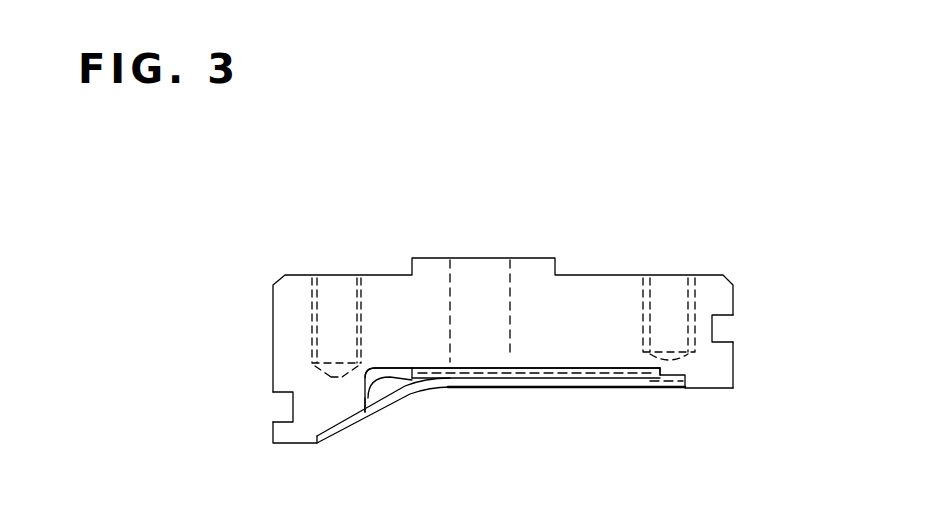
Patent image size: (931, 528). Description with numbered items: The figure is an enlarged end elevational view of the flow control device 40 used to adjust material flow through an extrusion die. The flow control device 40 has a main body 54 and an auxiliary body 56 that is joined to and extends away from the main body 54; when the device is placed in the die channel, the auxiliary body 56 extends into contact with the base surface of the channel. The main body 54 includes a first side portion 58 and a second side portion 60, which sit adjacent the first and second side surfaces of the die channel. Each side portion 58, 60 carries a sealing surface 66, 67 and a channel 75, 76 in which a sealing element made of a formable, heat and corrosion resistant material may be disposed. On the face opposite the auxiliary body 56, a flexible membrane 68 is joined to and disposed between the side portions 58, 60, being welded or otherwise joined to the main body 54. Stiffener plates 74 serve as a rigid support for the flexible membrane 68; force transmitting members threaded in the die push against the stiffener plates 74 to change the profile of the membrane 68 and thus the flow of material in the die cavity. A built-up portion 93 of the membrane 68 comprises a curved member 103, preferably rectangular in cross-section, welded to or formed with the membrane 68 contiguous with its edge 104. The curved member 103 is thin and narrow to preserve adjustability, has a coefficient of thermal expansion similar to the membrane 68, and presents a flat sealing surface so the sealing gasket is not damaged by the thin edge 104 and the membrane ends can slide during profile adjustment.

The flow control device 40 is at (553, 350).
The main body 54 is at (437, 293).
The auxiliary body 56 is at (531, 272).
The first side portion 58 is at (285, 310).
The second side portion 60 is at (715, 292).
The sealing surface 66 is at (272, 434).
The sealing surface 67 is at (733, 373).
The flexible membrane 68 is at (422, 385).
The stiffener plate 74 is at (575, 378).
The channel 75 is at (292, 407).
The channel 76 is at (713, 328).
The built-up portion 93 is at (649, 378).
The curved member 103 is at (386, 383).
The edge 104 is at (369, 405).